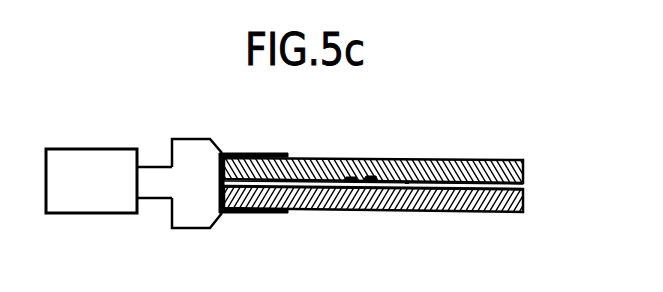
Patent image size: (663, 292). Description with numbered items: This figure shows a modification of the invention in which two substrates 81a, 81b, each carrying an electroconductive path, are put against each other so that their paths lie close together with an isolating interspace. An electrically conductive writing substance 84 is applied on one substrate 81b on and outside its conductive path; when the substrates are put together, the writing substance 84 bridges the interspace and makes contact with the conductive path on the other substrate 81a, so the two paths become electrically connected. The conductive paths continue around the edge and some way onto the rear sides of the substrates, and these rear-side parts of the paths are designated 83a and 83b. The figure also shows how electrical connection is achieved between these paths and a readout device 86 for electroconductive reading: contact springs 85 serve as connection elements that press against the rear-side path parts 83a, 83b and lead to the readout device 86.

The substrate 81a is at (523, 170).
The substrate 81b is at (523, 198).
The rear-side path part 83a is at (288, 157).
The rear-side path part 83b is at (285, 212).
The electrically conductive writing substance 84 is at (367, 178).
The contact springs 85 is at (222, 152).
The readout device 86 is at (108, 203).